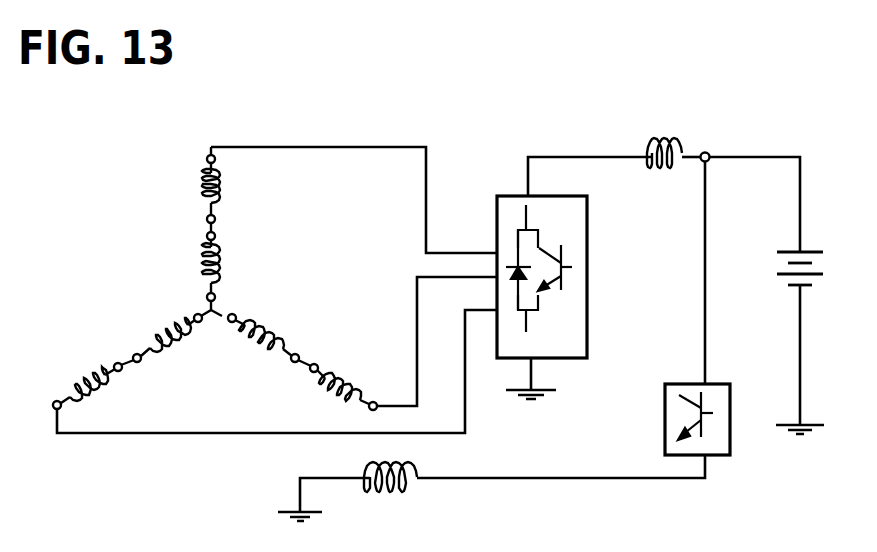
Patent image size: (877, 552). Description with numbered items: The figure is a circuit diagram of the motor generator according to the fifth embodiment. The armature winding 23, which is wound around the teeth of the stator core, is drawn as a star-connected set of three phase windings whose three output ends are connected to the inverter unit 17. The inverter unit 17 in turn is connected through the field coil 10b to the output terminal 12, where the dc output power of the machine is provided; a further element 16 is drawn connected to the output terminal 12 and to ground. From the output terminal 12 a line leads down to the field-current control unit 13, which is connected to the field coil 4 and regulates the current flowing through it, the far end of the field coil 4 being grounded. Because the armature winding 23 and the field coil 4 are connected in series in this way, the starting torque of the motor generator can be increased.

The armature winding 23 is at (200, 190).
The inverter unit 17 is at (497, 223).
The field coil 10b is at (650, 150).
The output terminal 12 is at (708, 153).
The battery 16 is at (812, 250).
The field-current control unit 13 is at (730, 425).
The field coil 4 is at (398, 495).